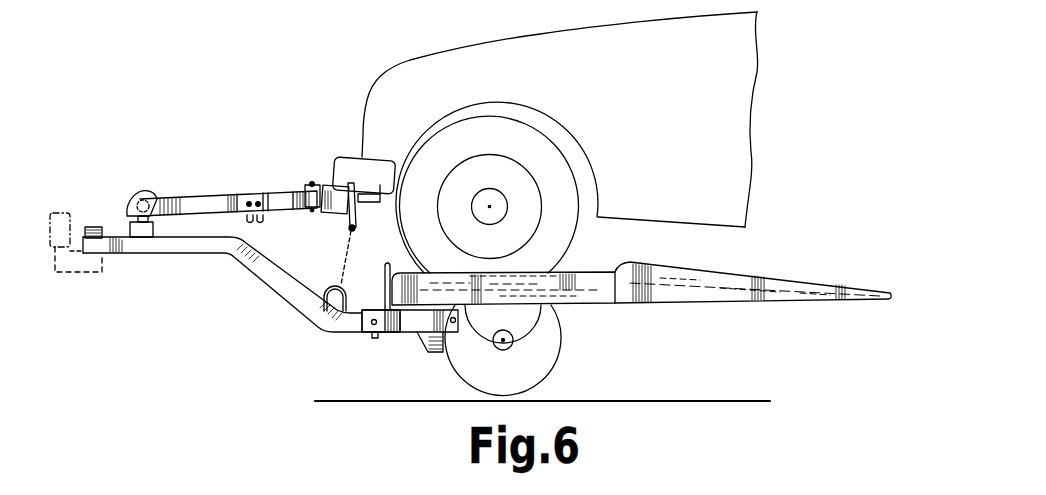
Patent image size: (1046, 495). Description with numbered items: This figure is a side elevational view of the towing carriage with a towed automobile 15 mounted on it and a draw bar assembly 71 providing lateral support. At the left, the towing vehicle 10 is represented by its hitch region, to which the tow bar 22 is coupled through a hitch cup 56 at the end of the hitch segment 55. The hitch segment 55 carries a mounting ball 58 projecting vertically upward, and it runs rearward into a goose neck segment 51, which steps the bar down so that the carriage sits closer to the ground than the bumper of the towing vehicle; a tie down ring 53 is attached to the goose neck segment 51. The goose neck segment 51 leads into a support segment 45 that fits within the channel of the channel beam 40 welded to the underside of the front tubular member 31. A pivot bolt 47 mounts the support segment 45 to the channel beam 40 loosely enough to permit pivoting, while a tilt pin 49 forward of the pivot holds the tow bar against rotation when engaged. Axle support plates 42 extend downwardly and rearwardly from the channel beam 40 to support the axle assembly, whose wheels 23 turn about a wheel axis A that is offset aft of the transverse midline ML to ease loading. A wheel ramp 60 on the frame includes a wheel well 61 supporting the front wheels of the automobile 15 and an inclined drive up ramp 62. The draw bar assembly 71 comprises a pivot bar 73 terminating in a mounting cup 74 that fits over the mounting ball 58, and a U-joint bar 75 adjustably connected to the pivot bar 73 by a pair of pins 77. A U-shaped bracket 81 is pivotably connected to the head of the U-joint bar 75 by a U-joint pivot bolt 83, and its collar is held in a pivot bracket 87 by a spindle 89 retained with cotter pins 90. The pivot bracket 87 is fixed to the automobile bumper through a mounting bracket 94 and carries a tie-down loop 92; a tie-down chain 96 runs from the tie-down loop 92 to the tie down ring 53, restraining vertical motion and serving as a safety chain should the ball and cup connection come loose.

The towing vehicle 10 is at (60, 195).
The towed automobile 15 is at (360, 116).
The tow bar 22 is at (222, 290).
The wheels 23 is at (515, 350).
The front tubular member 31 is at (389, 345).
The channel beam 40 is at (424, 342).
The axle support plates 42 is at (435, 353).
The support segment 45 is at (348, 326).
The pivot bolt 47 is at (454, 317).
The tilt pin 49 is at (374, 340).
The goose neck segment 51 is at (286, 284).
The tie down ring 53 is at (348, 296).
The hitch segment 55 is at (161, 256).
The hitch cup 56 is at (92, 226).
The mounting ball 58 is at (148, 200).
The wheel ramps 60 is at (753, 312).
The wheel well 61 is at (586, 305).
The inclined drive up ramp 62 is at (719, 292).
The draw bar assembly 71 is at (228, 161).
The pivot bar 73 is at (192, 196).
The mounting cup 74 is at (140, 197).
The U-joint bar 75 is at (269, 180).
The pins 77 is at (256, 223).
The U-shaped bracket 81 is at (314, 181).
The U-joint pivot bolt 83 is at (311, 184).
The pivot bracket 87 is at (346, 208).
The spindle 89 is at (342, 195).
The cotter pins 90 is at (328, 214).
The tie-down loop 92 is at (355, 229).
The mounting bracket 94 is at (375, 202).
The tie-down chain 96 is at (340, 267).
The midline ML is at (497, 272).
The wheel axis A is at (503, 340).